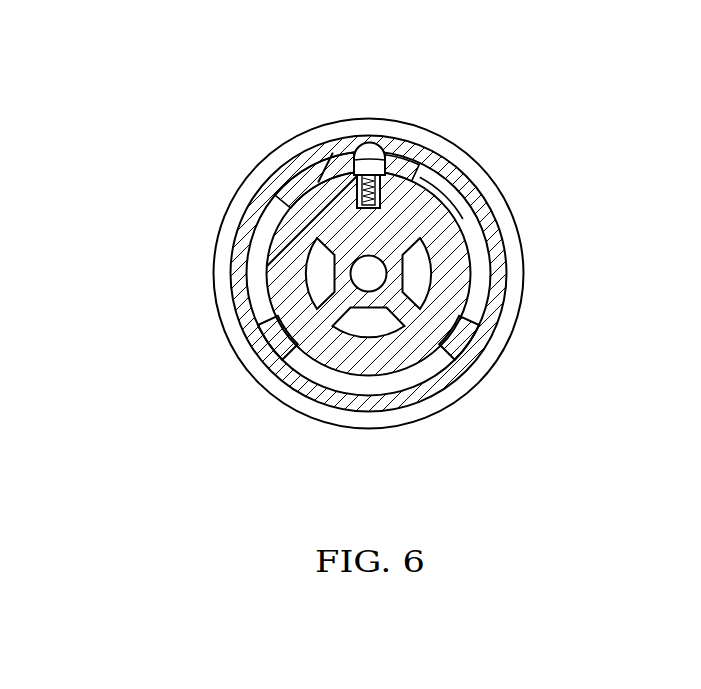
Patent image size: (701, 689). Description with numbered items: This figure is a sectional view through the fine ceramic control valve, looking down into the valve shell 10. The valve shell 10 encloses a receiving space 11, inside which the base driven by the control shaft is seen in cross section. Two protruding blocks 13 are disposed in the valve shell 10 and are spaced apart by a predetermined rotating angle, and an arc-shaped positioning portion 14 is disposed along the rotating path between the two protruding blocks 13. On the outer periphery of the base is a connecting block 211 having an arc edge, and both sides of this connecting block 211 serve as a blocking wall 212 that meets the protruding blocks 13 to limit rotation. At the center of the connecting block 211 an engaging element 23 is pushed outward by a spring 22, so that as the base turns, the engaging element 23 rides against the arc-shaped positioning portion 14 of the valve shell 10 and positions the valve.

The valve shell 10 is at (527, 272).
The receiving space 11 is at (255, 270).
The protruding blocks 13 is at (278, 340).
The arc-shaped positioning portion 14 is at (370, 150).
The spring 22 is at (356, 178).
The engaging element 23 is at (362, 150).
The connecting block 211 is at (402, 153).
The blocking wall 212 is at (420, 168).